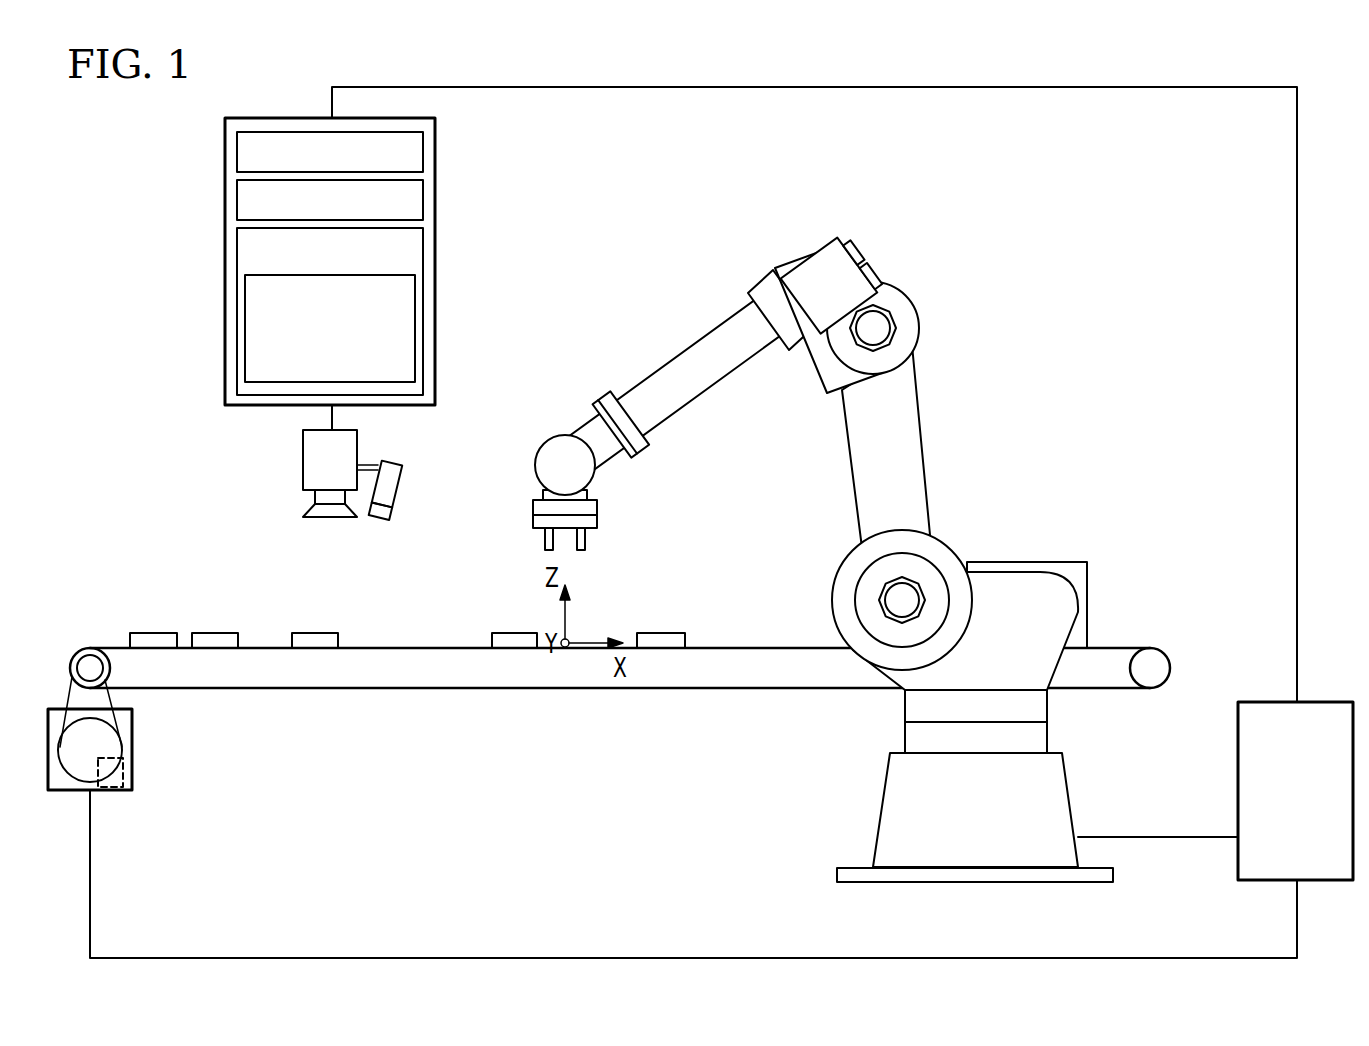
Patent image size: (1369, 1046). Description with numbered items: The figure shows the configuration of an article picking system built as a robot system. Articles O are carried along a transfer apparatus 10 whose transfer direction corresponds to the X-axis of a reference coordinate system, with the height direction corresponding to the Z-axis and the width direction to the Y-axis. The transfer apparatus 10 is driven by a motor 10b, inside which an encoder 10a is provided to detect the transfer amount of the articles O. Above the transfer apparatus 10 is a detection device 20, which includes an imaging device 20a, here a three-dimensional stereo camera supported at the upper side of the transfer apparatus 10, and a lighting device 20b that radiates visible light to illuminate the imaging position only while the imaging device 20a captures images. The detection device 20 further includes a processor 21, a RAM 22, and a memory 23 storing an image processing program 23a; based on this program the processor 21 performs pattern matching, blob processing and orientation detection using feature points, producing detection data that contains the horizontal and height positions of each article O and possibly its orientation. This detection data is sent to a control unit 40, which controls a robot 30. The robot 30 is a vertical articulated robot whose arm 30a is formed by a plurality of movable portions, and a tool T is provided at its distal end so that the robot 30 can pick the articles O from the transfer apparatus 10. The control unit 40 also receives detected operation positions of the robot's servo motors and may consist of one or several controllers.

The transfer apparatus 10 is at (609, 679).
The encoder 10a is at (123, 772).
The motor 10b is at (132, 727).
The detection device 20 is at (356, 354).
The imaging device 20a is at (303, 458).
The lighting device 20b is at (397, 503).
The processor 21 is at (423, 150).
The RAM 22 is at (423, 198).
The memory 23 is at (423, 246).
The image processing program 23a is at (415, 350).
The robot 30 is at (823, 557).
The arm 30a is at (920, 437).
The control unit 40 is at (1238, 767).
The tool T is at (587, 533).
The articles O is at (155, 633).